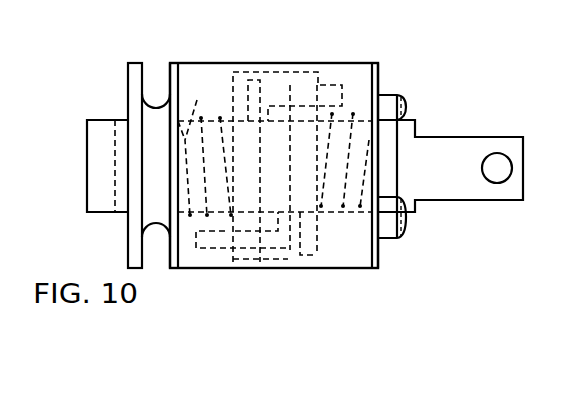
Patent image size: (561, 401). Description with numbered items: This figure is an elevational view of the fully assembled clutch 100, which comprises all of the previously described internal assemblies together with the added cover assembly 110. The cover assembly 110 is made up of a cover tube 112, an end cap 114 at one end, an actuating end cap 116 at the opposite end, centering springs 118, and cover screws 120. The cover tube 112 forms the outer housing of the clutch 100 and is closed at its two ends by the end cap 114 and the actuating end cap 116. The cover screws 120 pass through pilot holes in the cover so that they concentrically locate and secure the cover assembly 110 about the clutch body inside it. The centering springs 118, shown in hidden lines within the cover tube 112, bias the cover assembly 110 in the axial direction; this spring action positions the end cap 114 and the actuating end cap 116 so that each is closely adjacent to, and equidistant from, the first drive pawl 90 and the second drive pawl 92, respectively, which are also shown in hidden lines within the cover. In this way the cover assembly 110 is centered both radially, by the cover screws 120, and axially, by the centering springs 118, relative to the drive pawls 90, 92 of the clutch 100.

The first drive pawl 90 is at (330, 84).
The second drive pawl 92 is at (217, 248).
The clutch 100 is at (172, 48).
The cover assembly 110 is at (355, 72).
The cover tube 112 is at (196, 72).
The end cap 114 is at (380, 80).
The actuating end cap 116 is at (172, 80).
The centering springs 118 is at (197, 108).
The cover screws 120 is at (407, 109).